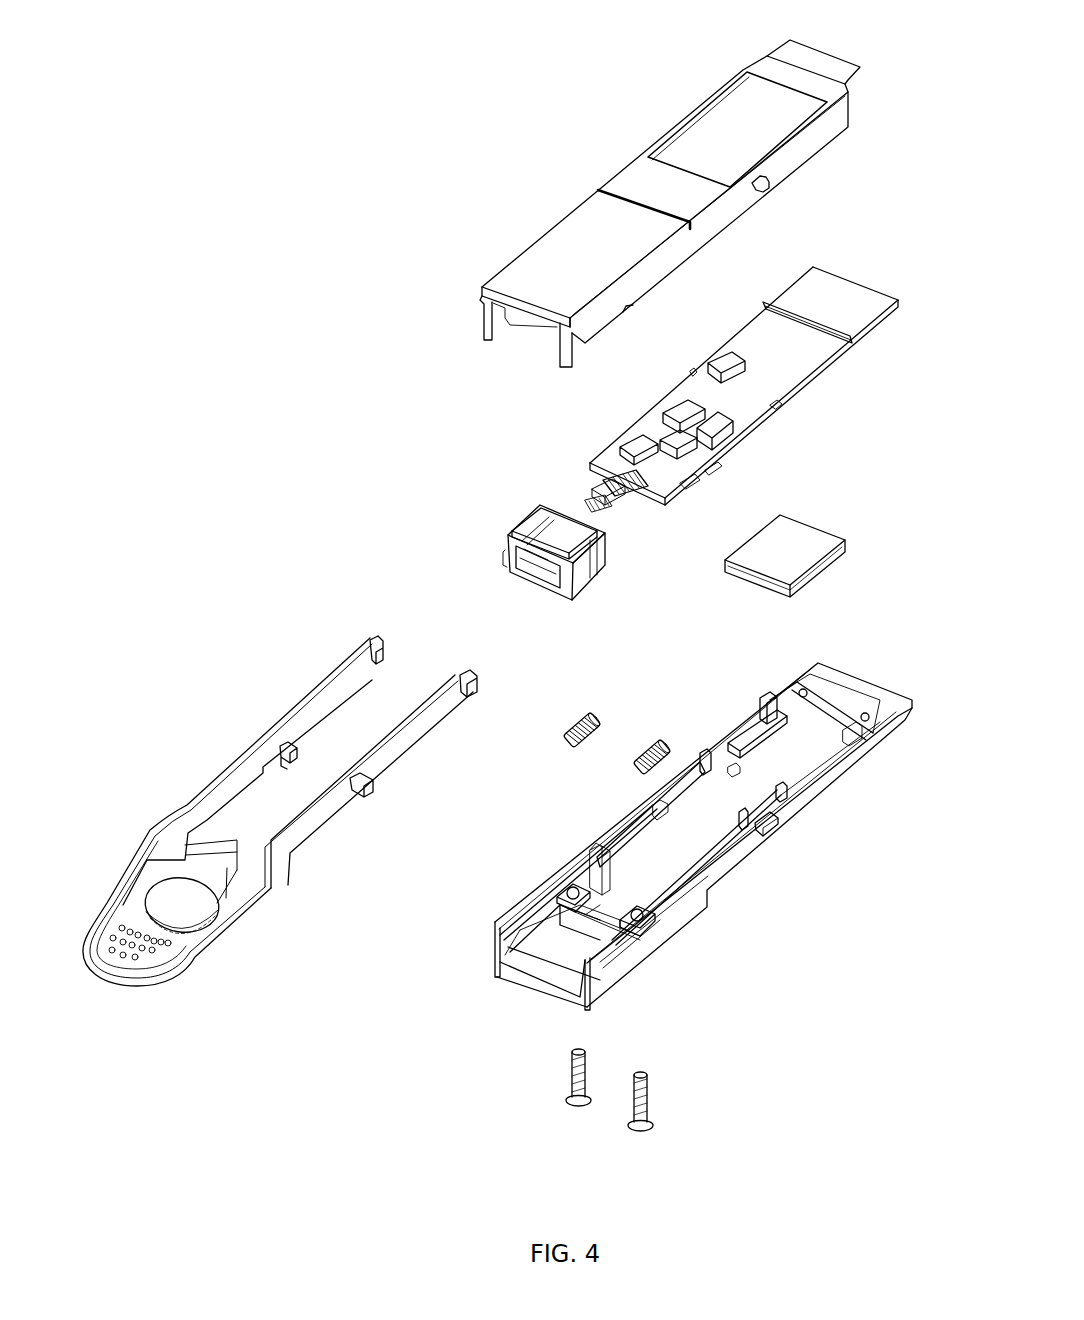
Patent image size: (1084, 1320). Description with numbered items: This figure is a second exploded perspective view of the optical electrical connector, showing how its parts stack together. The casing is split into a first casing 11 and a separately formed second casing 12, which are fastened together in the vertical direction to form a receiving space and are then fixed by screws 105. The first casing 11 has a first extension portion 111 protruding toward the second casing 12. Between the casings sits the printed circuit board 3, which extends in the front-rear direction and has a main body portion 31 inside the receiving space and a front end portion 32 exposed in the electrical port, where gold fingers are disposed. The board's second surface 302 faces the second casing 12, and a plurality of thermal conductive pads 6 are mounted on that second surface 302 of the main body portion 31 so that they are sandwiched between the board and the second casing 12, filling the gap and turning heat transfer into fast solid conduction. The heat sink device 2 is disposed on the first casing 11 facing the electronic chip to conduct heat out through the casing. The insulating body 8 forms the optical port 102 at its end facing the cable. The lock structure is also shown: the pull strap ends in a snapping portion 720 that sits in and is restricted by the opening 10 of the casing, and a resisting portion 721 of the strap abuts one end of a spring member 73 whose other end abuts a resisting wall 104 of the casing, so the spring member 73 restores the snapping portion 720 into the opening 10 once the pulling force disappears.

The second casing 12 is at (594, 243).
The opening 10 is at (754, 188).
The printed circuit board 3 is at (753, 386).
The second surface 302 is at (758, 338).
The main body portion 31 is at (787, 373).
The front end portion 32 is at (843, 310).
The thermal conductive pad 6 is at (722, 366).
The insulating body 8 is at (518, 531).
The optical port 102 is at (530, 583).
The heat sink device 2 is at (778, 548).
The snapping portion 720 is at (382, 637).
The resisting portion 721 is at (287, 746).
The first casing 11 is at (703, 822).
The first extension portion 111 is at (803, 722).
The resisting wall 104 is at (573, 884).
The spring member 73 is at (582, 722).
The screws 105 is at (572, 1070).